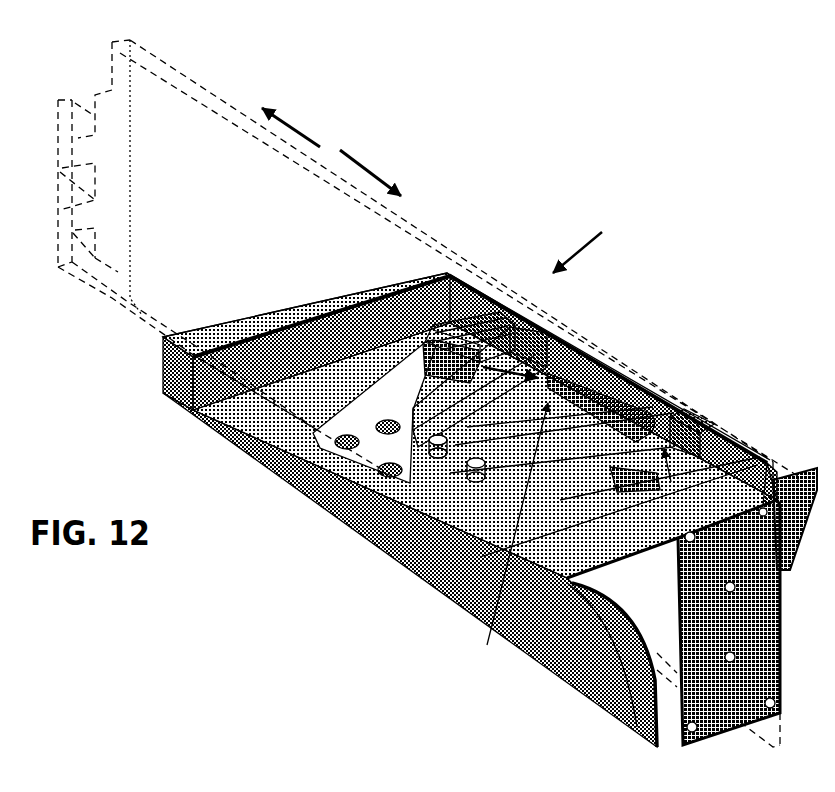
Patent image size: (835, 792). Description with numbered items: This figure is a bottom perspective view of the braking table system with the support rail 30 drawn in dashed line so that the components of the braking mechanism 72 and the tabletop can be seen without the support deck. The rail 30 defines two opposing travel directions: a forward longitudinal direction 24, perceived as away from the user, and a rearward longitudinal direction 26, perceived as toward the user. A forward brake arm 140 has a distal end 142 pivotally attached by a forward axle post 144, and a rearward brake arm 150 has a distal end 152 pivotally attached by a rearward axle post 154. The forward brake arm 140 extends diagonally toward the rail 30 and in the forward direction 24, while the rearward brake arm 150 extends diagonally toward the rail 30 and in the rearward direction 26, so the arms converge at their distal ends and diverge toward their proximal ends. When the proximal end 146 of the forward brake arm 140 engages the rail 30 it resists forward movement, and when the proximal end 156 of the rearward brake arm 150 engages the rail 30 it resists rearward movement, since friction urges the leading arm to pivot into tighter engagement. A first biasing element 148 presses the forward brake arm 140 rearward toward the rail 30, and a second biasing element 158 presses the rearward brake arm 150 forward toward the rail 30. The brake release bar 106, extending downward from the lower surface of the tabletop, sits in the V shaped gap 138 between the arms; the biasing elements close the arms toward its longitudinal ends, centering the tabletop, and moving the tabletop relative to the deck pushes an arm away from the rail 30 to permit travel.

The support rail 30 is at (203, 85).
The rearward longitudinal direction 26 is at (297, 120).
The forward longitudinal direction 24 is at (370, 175).
The braking mechanism 72 is at (592, 241).
The brake release bar 106 is at (630, 380).
The V shaped gap 138 is at (508, 538).
The forward brake arm 140 is at (609, 455).
The distal end of forward brake arm 142 is at (438, 462).
The forward axle post 144 is at (474, 478).
The proximal end of forward brake arm 146 is at (713, 427).
The first biasing element 148 is at (637, 490).
The rearward brake arm 150 is at (345, 455).
The distal end of rearward brake arm 152 is at (432, 442).
The rearward axle post 154 is at (431, 455).
The proximal end of rearward brake arm 156 is at (567, 350).
The second biasing element 158 is at (477, 357).